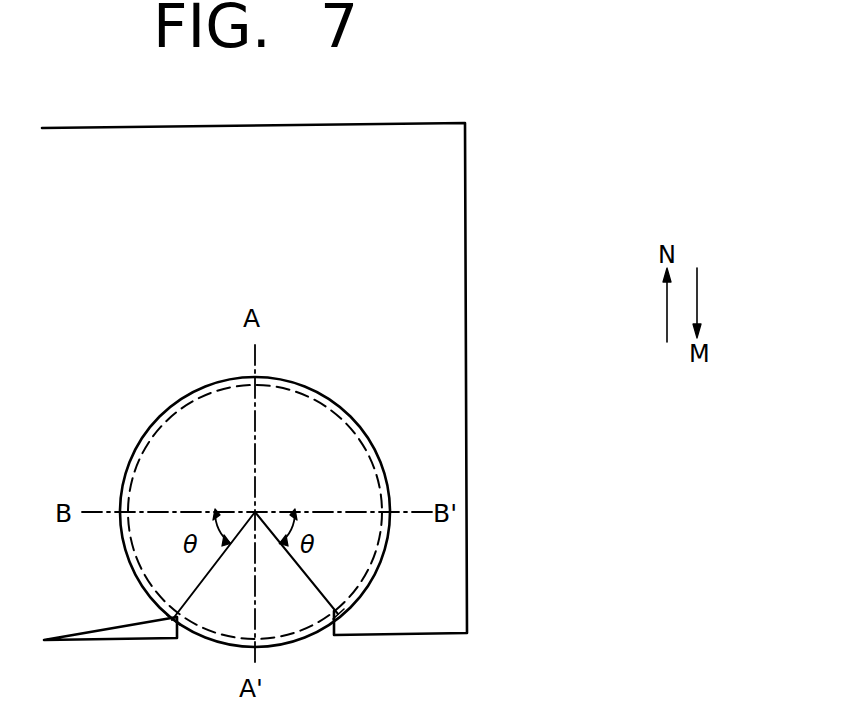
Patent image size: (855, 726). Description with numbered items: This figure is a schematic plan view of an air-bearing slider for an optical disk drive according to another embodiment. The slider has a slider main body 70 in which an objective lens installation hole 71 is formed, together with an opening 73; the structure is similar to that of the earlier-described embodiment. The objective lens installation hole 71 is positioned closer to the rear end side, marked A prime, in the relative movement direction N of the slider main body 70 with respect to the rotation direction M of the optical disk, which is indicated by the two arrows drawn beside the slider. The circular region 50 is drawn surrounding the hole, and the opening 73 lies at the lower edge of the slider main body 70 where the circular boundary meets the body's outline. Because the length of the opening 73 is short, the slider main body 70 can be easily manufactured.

The slider main body 70 is at (467, 335).
The circular region 50 is at (378, 442).
The objective lens installation hole 71 is at (336, 414).
The opening 73 is at (180, 636).